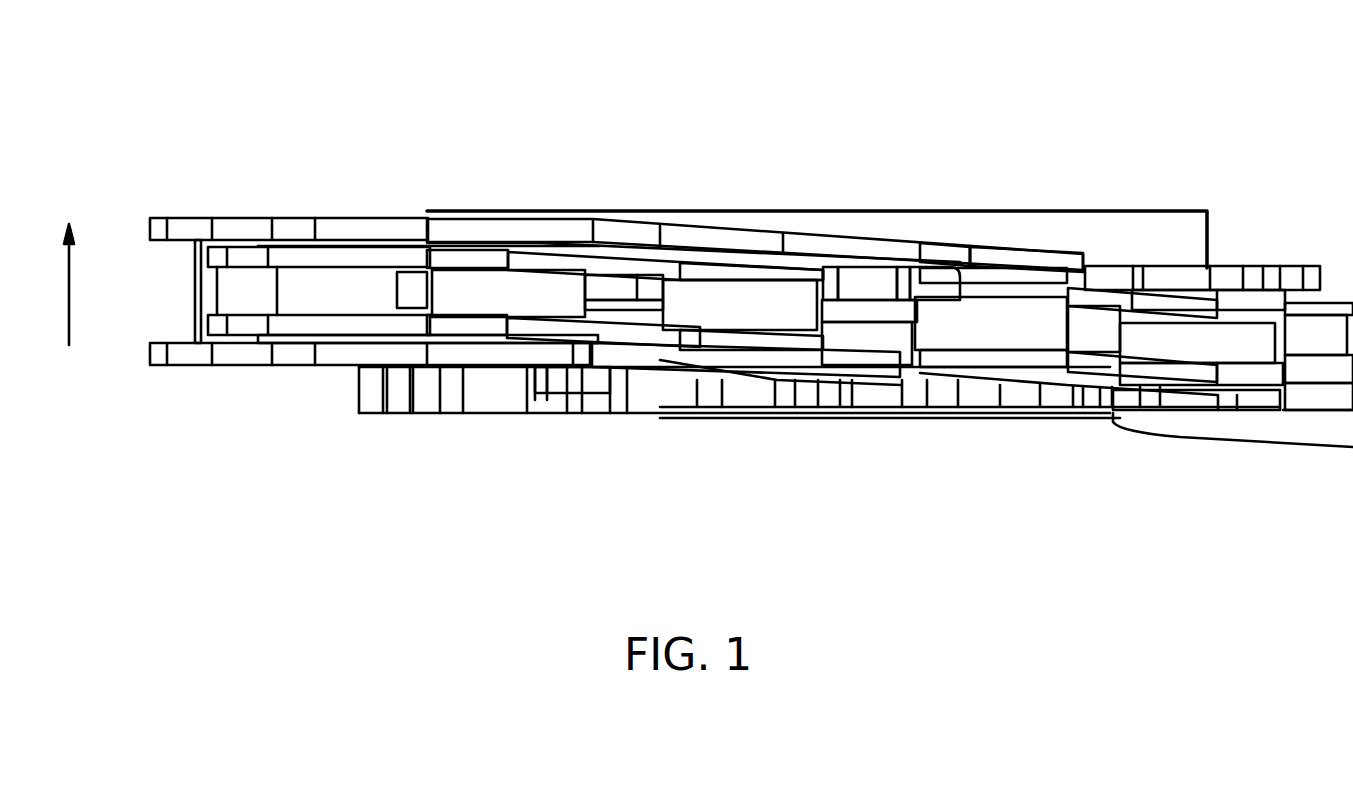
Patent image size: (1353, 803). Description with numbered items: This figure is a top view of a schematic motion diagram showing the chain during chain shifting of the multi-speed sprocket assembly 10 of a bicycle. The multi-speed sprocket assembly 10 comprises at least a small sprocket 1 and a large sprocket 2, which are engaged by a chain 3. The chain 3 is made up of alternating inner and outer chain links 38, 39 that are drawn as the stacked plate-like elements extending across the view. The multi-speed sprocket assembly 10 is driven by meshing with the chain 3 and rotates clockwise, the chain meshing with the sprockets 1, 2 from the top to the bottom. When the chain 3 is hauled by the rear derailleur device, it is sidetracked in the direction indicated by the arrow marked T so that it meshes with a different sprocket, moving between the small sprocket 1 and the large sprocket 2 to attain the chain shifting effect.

The multi-speed sprocket assembly 10 is at (337, 172).
The small sprocket 1 is at (570, 393).
The large sprocket 2 is at (1272, 268).
The chain 3 is at (1160, 342).
The inner chain link 38 is at (637, 340).
The outer chain link 39 is at (820, 365).